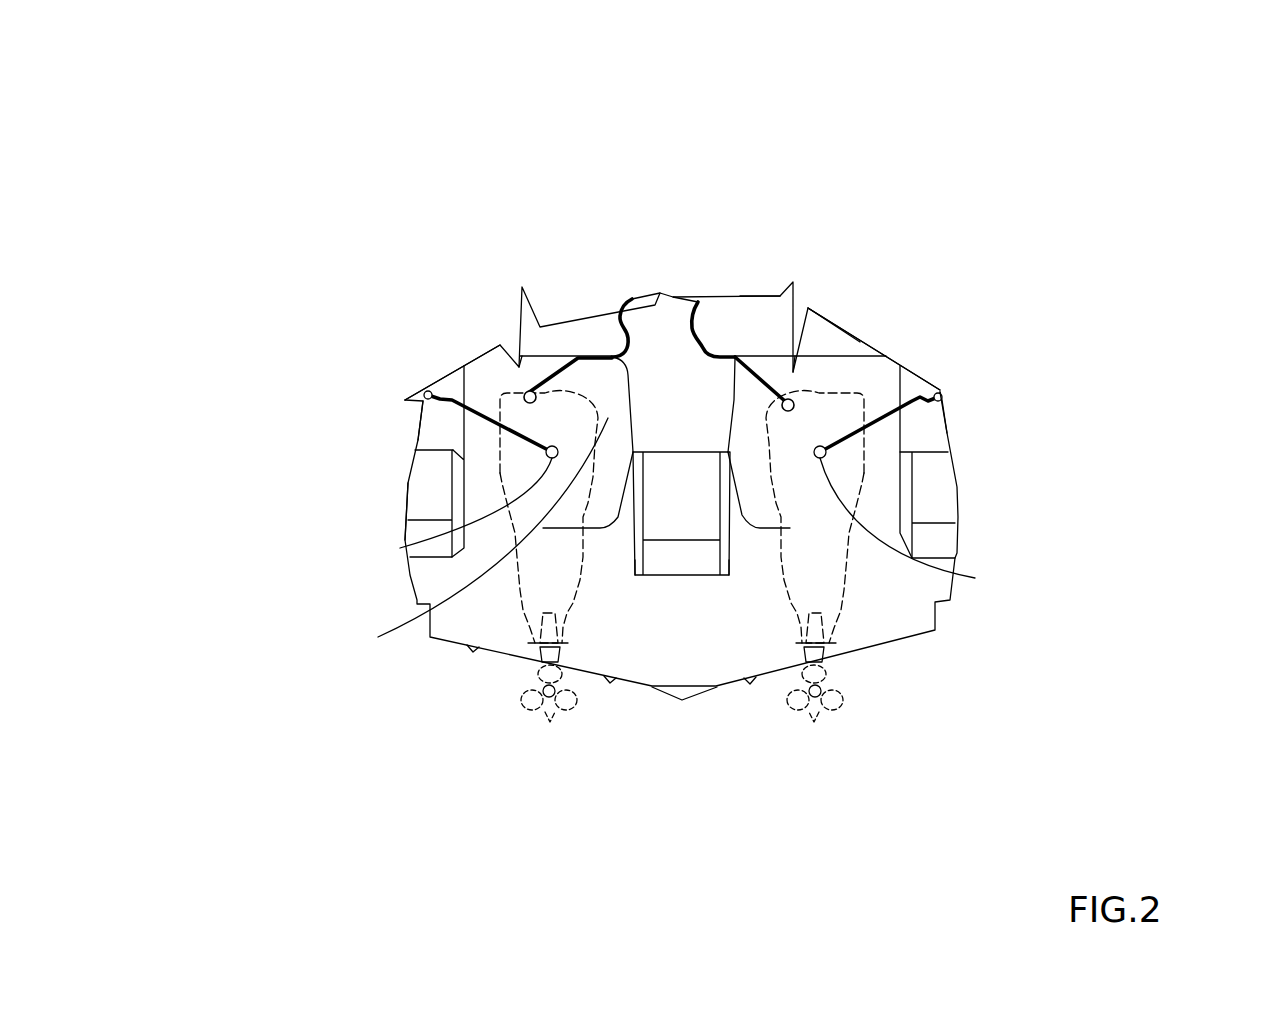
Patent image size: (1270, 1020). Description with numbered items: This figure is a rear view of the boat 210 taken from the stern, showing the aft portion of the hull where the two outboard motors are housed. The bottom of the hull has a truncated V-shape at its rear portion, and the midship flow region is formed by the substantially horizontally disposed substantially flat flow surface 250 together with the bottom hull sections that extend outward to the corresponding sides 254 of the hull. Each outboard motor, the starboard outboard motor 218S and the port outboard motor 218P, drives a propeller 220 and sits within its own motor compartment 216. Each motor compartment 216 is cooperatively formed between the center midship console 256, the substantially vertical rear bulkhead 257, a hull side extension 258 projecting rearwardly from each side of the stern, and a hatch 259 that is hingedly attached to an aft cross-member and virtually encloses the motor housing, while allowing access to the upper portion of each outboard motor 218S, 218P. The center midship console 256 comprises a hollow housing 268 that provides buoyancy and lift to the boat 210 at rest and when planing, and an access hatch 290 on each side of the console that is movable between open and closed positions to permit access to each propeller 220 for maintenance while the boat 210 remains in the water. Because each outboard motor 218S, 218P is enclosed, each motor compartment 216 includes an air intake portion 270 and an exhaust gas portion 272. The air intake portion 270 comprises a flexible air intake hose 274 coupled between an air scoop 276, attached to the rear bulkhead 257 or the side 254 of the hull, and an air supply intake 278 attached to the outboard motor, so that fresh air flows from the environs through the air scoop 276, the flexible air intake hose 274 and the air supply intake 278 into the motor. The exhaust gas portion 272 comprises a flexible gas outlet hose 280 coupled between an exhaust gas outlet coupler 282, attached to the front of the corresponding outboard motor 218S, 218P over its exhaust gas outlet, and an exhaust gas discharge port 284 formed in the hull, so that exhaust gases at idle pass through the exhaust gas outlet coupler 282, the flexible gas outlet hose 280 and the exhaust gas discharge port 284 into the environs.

The boat 210 is at (993, 272).
The motor compartment 216 is at (490, 400).
The port outboard motor 218P is at (568, 385).
The starboard outboard motor 218S is at (825, 380).
The propeller 220 is at (553, 703).
The flat flow surface 250 is at (628, 688).
The side of the hull 254 is at (407, 482).
The center midship console 256 is at (685, 437).
The rear bulkhead 257 is at (463, 538).
The hull side extension 258 is at (425, 503).
The hatch 259 is at (862, 344).
The hollow housing 268 is at (759, 352).
The air intake portion 270 is at (520, 355).
The exhaust gas portion 272 is at (470, 432).
The flexible air intake hose 274 is at (557, 372).
The air scoop 276 is at (620, 318).
The air supply intake 278 is at (525, 390).
The flexible gas outlet hose 280 is at (423, 388).
The exhaust gas outlet coupler 282 is at (405, 546).
The exhaust gas discharge port 284 is at (423, 392).
The access hatch 290 is at (640, 538).